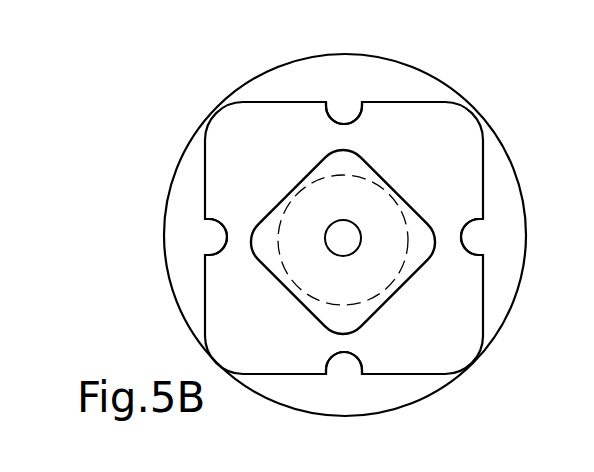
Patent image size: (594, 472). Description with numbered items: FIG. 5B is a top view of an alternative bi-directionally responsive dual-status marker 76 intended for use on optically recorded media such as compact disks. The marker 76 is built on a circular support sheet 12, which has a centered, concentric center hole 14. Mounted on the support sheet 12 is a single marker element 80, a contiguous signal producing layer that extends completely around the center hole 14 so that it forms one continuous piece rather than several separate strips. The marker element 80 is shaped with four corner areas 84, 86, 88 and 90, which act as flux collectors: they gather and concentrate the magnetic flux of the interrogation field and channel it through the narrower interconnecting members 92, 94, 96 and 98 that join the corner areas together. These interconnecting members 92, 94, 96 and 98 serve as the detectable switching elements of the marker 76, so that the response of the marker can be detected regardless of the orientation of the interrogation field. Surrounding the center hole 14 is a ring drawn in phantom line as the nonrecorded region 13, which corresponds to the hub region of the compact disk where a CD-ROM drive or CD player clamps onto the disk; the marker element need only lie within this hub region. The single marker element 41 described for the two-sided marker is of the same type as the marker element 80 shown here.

The circular support sheet 12 is at (510, 153).
The nonrecorded hub region 13 is at (383, 185).
The center hole 14 is at (330, 249).
The single marker element 41 is at (305, 208).
The marker 76 is at (497, 97).
The marker element 80 is at (223, 142).
The corner area 84 is at (262, 200).
The corner area 86 is at (463, 185).
The corner area 88 is at (298, 339).
The corner area 90 is at (463, 321).
The interconnecting member 92 is at (237, 237).
The interconnecting member 94 is at (345, 133).
The interconnecting member 96 is at (448, 237).
The interconnecting member 98 is at (342, 344).